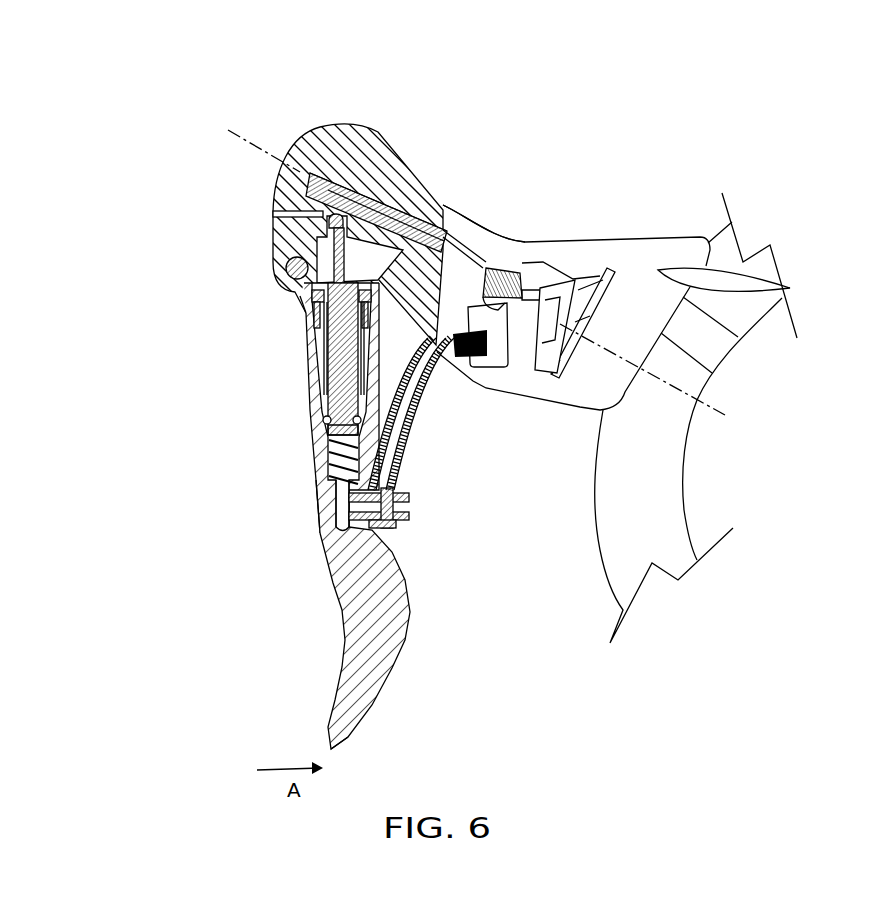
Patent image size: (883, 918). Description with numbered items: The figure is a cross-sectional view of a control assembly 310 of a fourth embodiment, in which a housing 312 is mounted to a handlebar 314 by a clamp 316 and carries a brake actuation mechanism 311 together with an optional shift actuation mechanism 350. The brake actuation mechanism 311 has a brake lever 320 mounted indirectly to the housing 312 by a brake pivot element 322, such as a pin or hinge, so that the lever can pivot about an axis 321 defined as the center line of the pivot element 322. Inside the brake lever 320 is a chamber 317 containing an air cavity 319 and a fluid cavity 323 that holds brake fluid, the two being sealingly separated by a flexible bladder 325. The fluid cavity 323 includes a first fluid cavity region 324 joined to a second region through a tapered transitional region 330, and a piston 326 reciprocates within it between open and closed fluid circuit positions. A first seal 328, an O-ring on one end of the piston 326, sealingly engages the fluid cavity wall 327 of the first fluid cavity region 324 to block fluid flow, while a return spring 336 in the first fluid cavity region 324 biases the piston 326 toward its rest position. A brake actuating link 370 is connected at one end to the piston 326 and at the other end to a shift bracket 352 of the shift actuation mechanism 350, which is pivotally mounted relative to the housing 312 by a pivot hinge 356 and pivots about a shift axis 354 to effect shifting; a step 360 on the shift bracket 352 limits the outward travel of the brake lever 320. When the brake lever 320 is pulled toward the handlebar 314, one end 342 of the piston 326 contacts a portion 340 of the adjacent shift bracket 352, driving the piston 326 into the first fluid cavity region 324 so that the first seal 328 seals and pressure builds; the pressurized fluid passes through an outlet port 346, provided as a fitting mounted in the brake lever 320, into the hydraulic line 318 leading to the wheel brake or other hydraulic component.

The control assembly 310 is at (605, 184).
The brake actuation mechanism 311 is at (264, 647).
The housing 312 is at (630, 245).
The handlebar 314 is at (665, 517).
The clamp 316 is at (712, 353).
The chamber 317 is at (298, 378).
The hydraulic line 318 is at (408, 405).
The air cavity 319 is at (307, 325).
The brake lever 320 is at (345, 605).
The axis 321 is at (316, 306).
The brake pivot element 322 is at (272, 220).
The fluid cavity 323 is at (362, 402).
The first fluid cavity region 324 is at (327, 463).
The flexible bladder 325 is at (317, 360).
The piston 326 is at (313, 343).
The fluid cavity wall 327 is at (327, 445).
The first seal 328 is at (320, 423).
The tapered transitional region 330 is at (313, 413).
The return spring 336 is at (317, 483).
The portion of shift bracket 340 is at (333, 177).
The end of piston 342 is at (412, 162).
The outlet port 346 is at (398, 523).
The shift actuation mechanism 350 is at (520, 322).
The shift bracket 352 is at (455, 285).
The shift axis 354 is at (723, 413).
The pivot hinge 356 is at (443, 190).
The step 360 is at (273, 267).
The brake actuating link 370 is at (362, 186).